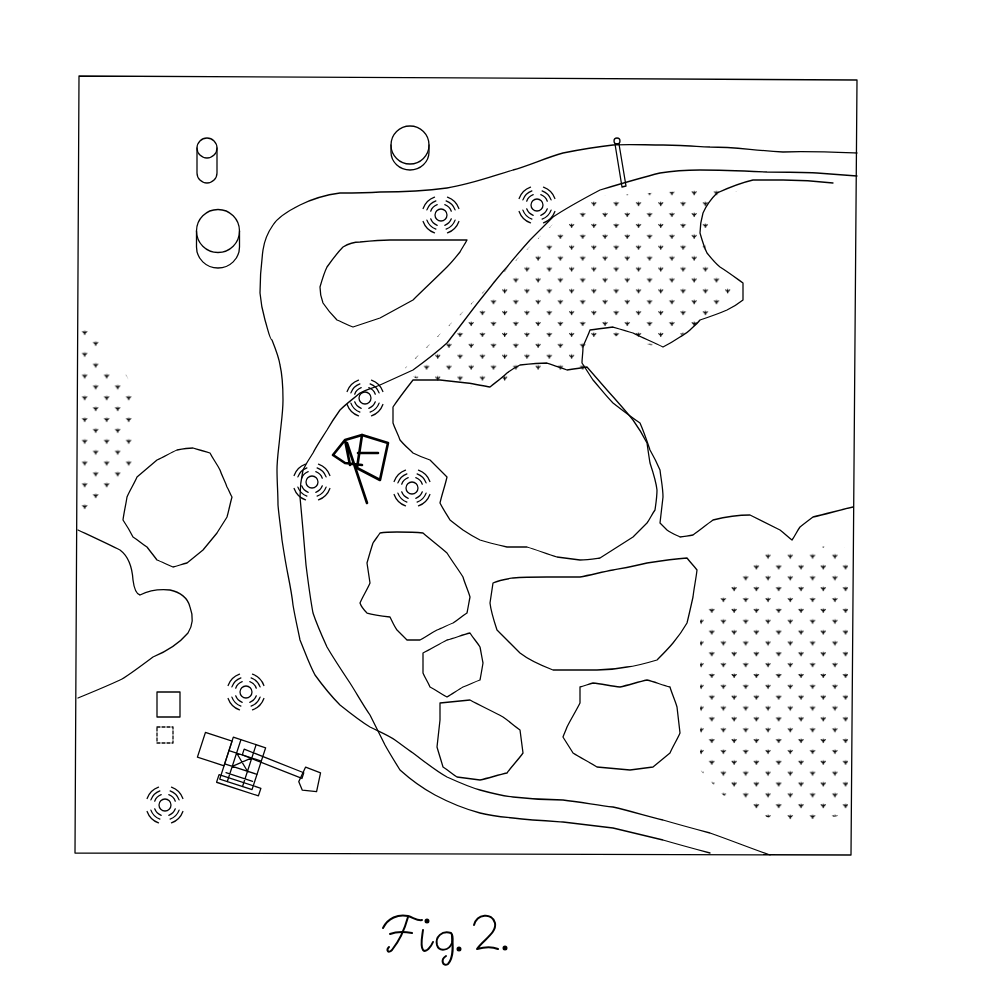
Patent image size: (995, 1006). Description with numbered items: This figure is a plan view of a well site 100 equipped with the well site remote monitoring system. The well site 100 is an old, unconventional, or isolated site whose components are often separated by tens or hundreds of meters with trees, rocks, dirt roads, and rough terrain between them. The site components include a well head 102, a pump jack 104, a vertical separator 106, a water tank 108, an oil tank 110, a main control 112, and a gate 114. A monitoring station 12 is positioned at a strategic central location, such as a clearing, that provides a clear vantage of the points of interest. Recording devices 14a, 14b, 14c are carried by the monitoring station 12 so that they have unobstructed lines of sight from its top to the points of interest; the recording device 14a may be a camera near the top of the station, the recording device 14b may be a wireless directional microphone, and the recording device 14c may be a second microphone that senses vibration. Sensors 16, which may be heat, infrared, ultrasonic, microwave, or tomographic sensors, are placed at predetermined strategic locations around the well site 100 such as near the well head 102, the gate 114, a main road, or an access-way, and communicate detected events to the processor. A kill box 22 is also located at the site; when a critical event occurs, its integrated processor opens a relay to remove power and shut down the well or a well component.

The well site 100 is at (648, 60).
The well head 102 is at (233, 800).
The pump jack 104 is at (279, 795).
The vertical separator 106 is at (209, 163).
The water tank 108 is at (208, 233).
The oil tank 110 is at (422, 117).
The main control 112 is at (157, 700).
The gate 114 is at (630, 163).
The monitoring station 12 is at (337, 430).
The recording device 14a is at (358, 386).
The recording device 14b is at (425, 488).
The recording device 14c is at (311, 497).
The sensors 16 is at (430, 217).
The kill box 22 is at (153, 737).